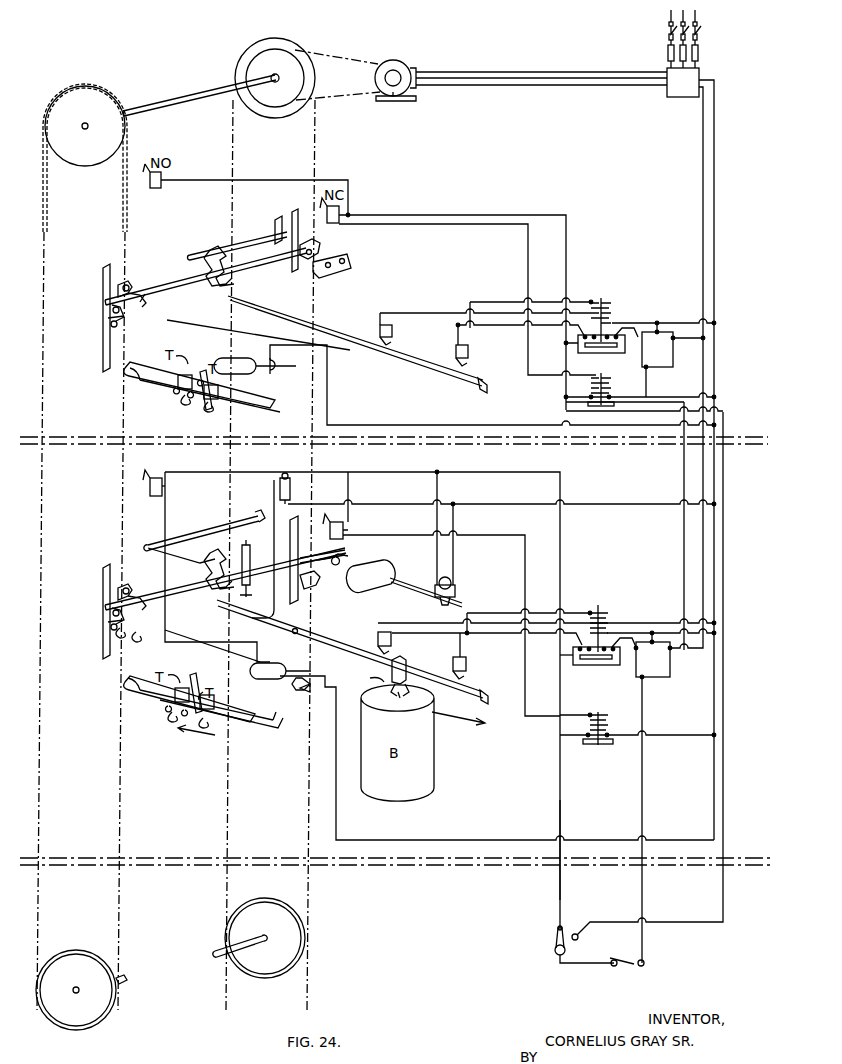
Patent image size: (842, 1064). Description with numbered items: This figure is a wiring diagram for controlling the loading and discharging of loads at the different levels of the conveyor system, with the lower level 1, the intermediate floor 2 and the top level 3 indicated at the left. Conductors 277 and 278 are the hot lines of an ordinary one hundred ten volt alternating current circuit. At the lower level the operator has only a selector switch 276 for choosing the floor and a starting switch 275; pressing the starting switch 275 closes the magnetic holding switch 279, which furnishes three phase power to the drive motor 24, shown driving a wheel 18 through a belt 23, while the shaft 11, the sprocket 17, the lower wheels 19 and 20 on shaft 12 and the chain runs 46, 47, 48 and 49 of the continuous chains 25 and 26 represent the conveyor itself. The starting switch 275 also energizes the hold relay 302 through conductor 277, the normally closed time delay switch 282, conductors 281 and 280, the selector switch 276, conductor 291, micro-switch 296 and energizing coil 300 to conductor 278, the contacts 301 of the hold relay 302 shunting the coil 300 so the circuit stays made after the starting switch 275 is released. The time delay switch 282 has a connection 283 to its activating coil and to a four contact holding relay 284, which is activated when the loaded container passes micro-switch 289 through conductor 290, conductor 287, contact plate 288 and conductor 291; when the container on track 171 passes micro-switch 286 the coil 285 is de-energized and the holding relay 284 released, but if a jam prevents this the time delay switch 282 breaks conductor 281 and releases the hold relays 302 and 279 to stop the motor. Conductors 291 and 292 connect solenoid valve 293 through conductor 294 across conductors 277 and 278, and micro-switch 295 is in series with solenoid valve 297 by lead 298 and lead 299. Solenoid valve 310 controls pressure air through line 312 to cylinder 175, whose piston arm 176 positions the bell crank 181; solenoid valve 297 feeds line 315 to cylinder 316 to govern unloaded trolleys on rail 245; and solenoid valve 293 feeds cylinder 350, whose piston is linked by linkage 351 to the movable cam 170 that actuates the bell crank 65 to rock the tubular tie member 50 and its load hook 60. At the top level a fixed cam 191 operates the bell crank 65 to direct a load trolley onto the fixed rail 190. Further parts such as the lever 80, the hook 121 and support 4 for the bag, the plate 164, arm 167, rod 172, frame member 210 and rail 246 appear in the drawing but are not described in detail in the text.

The section line 1 is at (10, 943).
The intermediate floor 2 is at (12, 628).
The section line 3 is at (18, 305).
The hanger 4 is at (398, 696).
The shaft 11 is at (178, 85).
The shaft 12 is at (124, 980).
The sprocket 17 is at (76, 160).
The pulley 18 is at (254, 108).
The pulley 19 is at (75, 951).
The pulley 20 is at (275, 903).
The belt 23 is at (350, 64).
The drive motor 24 is at (394, 75).
The continuous chain 25 is at (118, 830).
The continuous chain 26 is at (306, 822).
The chain 46 is at (40, 784).
The chain 47 is at (226, 784).
The chain 48 is at (120, 784).
The chain 49 is at (308, 784).
The tubular tie member 50 is at (157, 287).
The load hook 60 is at (206, 286).
The bell crank 65 is at (318, 251).
The lever 80 is at (132, 310).
The hook 121 is at (390, 696).
The plate 164 is at (300, 601).
The arm 167 is at (304, 584).
The movable cam 170 is at (312, 577).
The track 171 is at (334, 640).
The rod 172 is at (189, 630).
The cylinder 175 is at (272, 602).
The piston arm 176 is at (244, 536).
The bell crank 181 is at (246, 592).
The fixed rail 190 is at (388, 365).
The fixed cam 191 is at (332, 270).
The frame member 210 is at (104, 347).
The rail 245 is at (254, 722).
The rail 246 is at (136, 691).
The starting switch 275 is at (636, 968).
The selector switch 276 is at (551, 952).
The conductor 277 is at (701, 193).
The conductor 278 is at (716, 193).
The magnetic holding switch 279 is at (659, 53).
The conductor 280 is at (581, 968).
The conductor 281 is at (644, 805).
The time delay switch 282 is at (662, 368).
The connection 283 is at (630, 632).
The holding relay 284 is at (594, 602).
The coil 285 is at (602, 616).
The micro-switch 286 is at (452, 665).
The conductor 287 is at (483, 641).
The contact plate 288 is at (607, 665).
The micro-switch 289 is at (391, 643).
The conductor 290 is at (427, 623).
The conductor 291 is at (562, 805).
The conductor 292 is at (438, 484).
The solenoid valve 293 is at (451, 588).
The conductor 294 is at (507, 506).
The micro-switch 295 is at (162, 493).
The micro-switch 296 is at (347, 528).
The solenoid valve 297 is at (272, 662).
The lead 298 is at (200, 630).
The lead 299 is at (332, 682).
The energizing coil 300 is at (604, 734).
The relay arm 301 is at (587, 748).
The hold relay 302 is at (598, 715).
The solenoid valve 310 is at (287, 494).
The line 312 is at (260, 503).
The line 315 is at (300, 686).
The cylinder 316 is at (272, 681).
The cylinder 350 is at (374, 564).
The linkage 351 is at (344, 555).